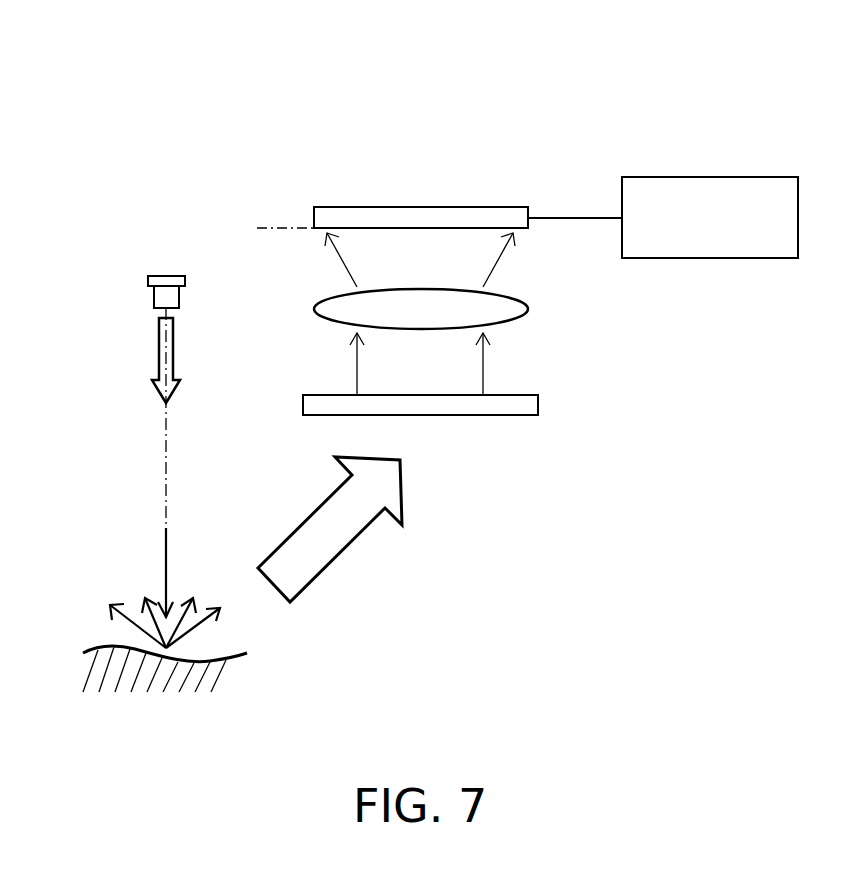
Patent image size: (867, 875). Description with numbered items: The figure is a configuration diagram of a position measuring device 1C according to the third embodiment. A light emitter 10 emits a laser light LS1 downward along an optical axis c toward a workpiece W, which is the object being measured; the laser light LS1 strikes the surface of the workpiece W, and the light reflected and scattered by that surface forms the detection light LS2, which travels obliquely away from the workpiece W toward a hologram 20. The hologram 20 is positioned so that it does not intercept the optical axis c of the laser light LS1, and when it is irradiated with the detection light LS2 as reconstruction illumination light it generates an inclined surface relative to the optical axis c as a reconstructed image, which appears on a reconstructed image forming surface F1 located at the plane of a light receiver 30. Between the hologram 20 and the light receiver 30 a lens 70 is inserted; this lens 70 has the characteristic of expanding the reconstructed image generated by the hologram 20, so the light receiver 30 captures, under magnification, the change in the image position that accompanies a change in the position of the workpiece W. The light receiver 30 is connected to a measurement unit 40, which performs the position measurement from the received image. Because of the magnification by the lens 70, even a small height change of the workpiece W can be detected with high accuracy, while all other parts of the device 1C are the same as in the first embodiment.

The position measuring device 1C is at (678, 103).
The light emitter 10 is at (168, 276).
The laser light LS1 is at (165, 353).
The optical axis c is at (166, 462).
The workpiece W is at (97, 647).
The detection light LS2 is at (330, 548).
The reconstructed image forming surface F1 is at (270, 228).
The light receiver 30 is at (433, 207).
The measurement unit 40 is at (768, 177).
The lens 70 is at (508, 312).
The hologram 20 is at (538, 402).